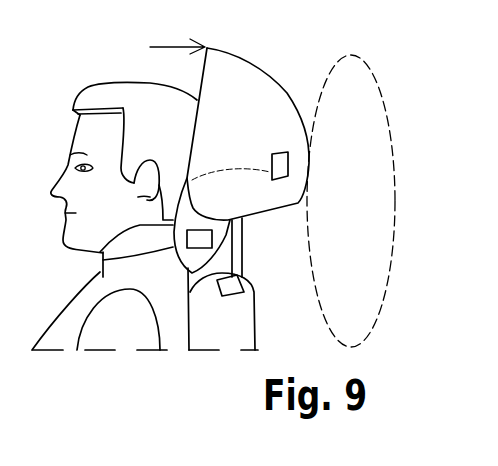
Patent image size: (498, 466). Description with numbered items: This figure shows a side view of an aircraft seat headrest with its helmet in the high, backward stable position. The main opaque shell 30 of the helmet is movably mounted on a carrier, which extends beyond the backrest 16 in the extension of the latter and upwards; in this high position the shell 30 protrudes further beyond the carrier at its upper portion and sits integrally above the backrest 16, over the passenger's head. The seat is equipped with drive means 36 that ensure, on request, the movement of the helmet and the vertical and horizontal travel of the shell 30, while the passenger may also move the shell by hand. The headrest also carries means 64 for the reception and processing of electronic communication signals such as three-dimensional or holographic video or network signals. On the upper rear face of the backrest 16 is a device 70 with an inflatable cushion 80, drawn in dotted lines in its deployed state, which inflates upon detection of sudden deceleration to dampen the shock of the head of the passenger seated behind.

The backrest 16 is at (220, 330).
The main opaque shell 30 is at (257, 84).
The drive means 36 is at (281, 164).
The means for reception and processing of electronic communication signals 64 is at (205, 233).
The device with inflatable cushion 70 is at (240, 281).
The inflatable cushion 80 is at (375, 325).